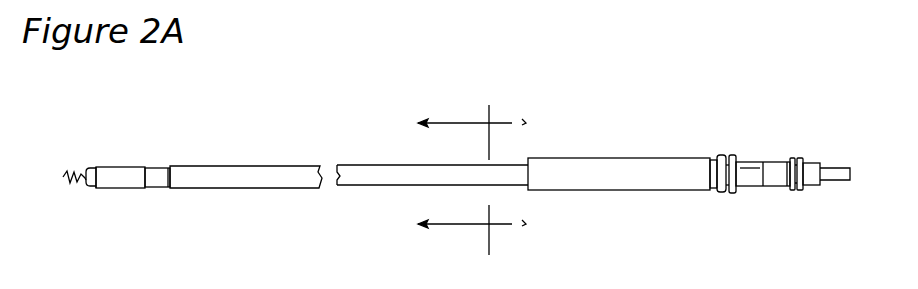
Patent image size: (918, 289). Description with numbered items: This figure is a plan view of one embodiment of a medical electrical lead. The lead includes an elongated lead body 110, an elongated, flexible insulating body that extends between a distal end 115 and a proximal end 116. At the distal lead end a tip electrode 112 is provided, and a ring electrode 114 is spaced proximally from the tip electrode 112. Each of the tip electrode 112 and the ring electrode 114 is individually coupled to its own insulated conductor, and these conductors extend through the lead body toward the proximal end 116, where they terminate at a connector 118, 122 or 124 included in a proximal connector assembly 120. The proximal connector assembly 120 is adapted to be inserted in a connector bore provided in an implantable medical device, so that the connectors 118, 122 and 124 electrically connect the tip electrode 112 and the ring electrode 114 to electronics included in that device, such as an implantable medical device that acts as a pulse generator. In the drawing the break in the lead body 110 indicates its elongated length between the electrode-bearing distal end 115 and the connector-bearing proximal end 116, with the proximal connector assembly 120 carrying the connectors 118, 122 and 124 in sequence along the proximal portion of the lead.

The elongated lead body 110 is at (364, 195).
The tip electrode 112 is at (69, 178).
The ring electrode 114 is at (153, 172).
The distal end 115 is at (219, 156).
The proximal end 116 is at (614, 150).
The connector 118 is at (722, 155).
The proximal connector assembly 120 is at (744, 162).
The connector 122 is at (800, 157).
The connector 124 is at (828, 167).